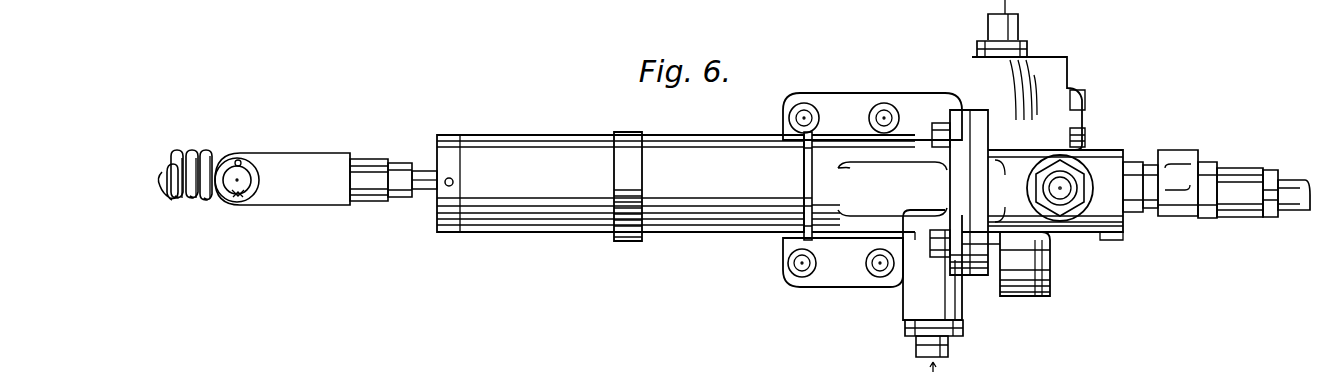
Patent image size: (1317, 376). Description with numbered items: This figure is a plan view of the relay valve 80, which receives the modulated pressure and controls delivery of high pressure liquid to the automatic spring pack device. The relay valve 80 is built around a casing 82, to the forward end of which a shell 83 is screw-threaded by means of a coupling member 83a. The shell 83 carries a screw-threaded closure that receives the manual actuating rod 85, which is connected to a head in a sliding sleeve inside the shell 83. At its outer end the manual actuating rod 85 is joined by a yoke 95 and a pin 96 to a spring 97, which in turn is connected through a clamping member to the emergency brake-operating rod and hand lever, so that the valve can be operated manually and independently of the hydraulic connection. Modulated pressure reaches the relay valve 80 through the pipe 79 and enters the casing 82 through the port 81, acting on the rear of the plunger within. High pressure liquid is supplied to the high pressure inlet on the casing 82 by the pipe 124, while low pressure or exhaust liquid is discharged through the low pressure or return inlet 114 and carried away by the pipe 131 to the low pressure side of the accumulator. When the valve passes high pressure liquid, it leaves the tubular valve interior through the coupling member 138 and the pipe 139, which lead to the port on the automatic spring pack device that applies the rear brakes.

The spring 97 is at (199, 155).
The yoke 95 is at (305, 160).
The pin 96 is at (245, 197).
The manual actuating rod 85 is at (428, 207).
The shell 83 is at (540, 143).
The coupling member 83a is at (812, 150).
The casing 82 is at (920, 103).
The relay valve 80 is at (771, 253).
The port 81 is at (905, 328).
The pipe 79 is at (949, 348).
The pipe 131 is at (1019, 30).
The low pressure or return inlet 114 is at (1029, 50).
The pipe 124 is at (1070, 220).
The coupling member 138 is at (1237, 228).
The pipe 139 is at (1292, 217).